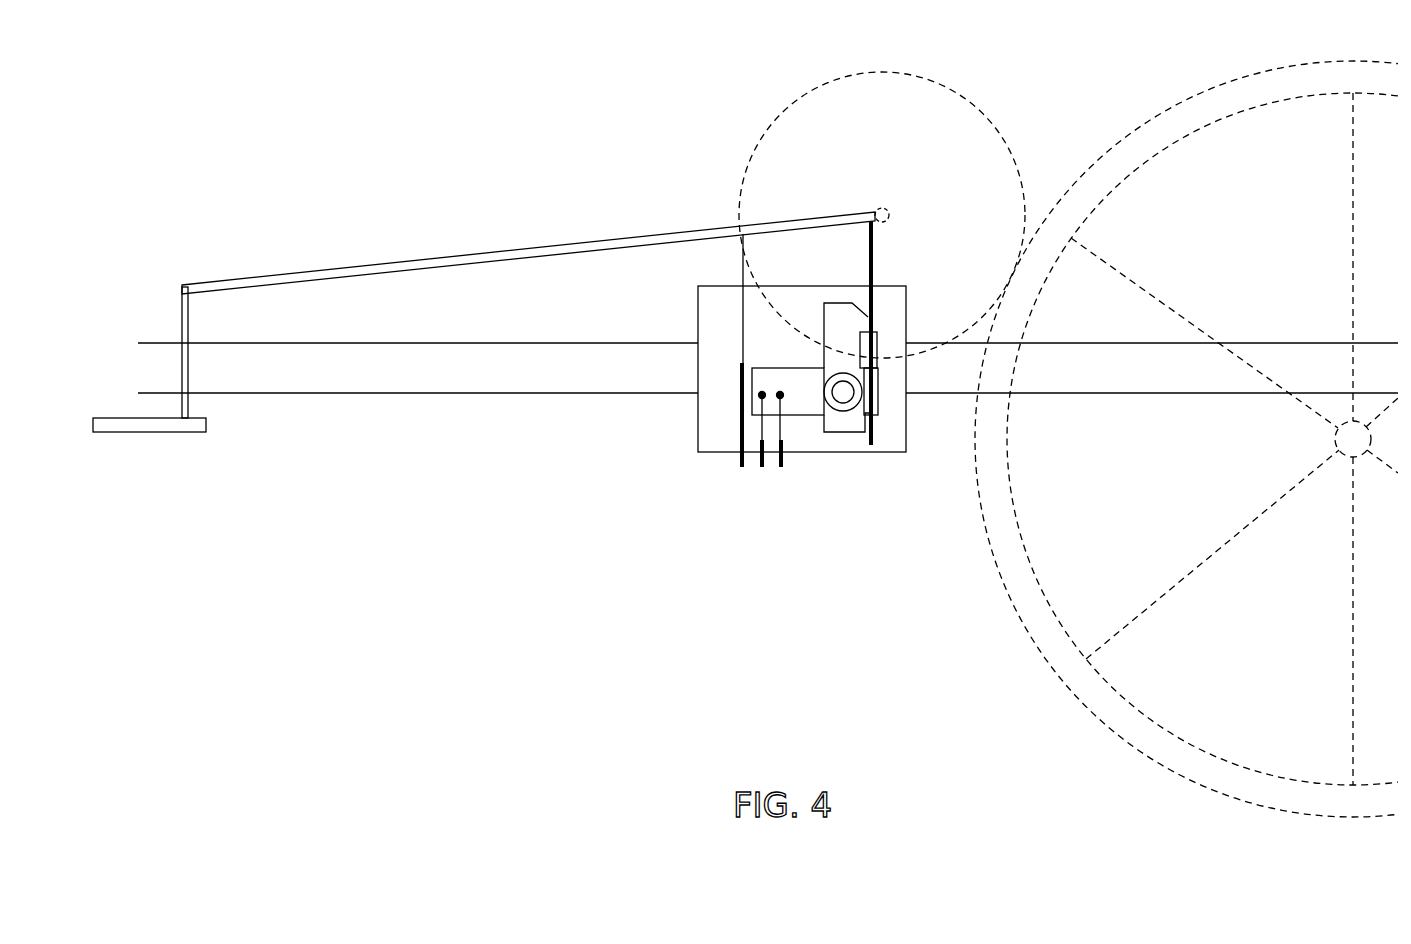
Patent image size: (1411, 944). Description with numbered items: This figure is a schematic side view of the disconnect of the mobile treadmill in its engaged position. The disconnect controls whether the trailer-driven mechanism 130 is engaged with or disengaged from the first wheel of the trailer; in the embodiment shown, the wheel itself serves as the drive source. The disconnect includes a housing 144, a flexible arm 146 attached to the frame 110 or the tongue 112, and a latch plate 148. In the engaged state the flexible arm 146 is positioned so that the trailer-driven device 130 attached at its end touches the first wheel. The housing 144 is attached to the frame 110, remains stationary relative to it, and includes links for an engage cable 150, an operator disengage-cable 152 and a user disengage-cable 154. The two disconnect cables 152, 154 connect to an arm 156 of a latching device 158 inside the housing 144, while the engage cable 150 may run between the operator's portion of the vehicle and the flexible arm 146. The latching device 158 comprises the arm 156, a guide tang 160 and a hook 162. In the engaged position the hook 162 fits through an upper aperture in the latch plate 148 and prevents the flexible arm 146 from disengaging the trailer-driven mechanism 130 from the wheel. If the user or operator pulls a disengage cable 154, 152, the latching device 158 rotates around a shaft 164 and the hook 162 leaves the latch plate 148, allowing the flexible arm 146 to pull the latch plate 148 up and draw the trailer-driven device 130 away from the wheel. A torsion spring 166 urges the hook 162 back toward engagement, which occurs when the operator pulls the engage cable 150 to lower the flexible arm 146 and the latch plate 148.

The frame 110 is at (343, 368).
The tongue 112 is at (145, 424).
The trailer-driven mechanism 130 is at (950, 90).
The housing 144 is at (698, 408).
The flexible arm 146 is at (510, 262).
The latch plate 148 is at (875, 265).
The engage cable 150 is at (739, 468).
The operator disengage-cable 152 is at (782, 468).
The user disengage-cable 154 is at (762, 468).
The arm 156 is at (765, 375).
The latching device 158 is at (768, 343).
The guide tang 160 is at (880, 396).
The hook 162 is at (877, 330).
The shaft 164 is at (843, 392).
The torsion spring 166 is at (843, 392).